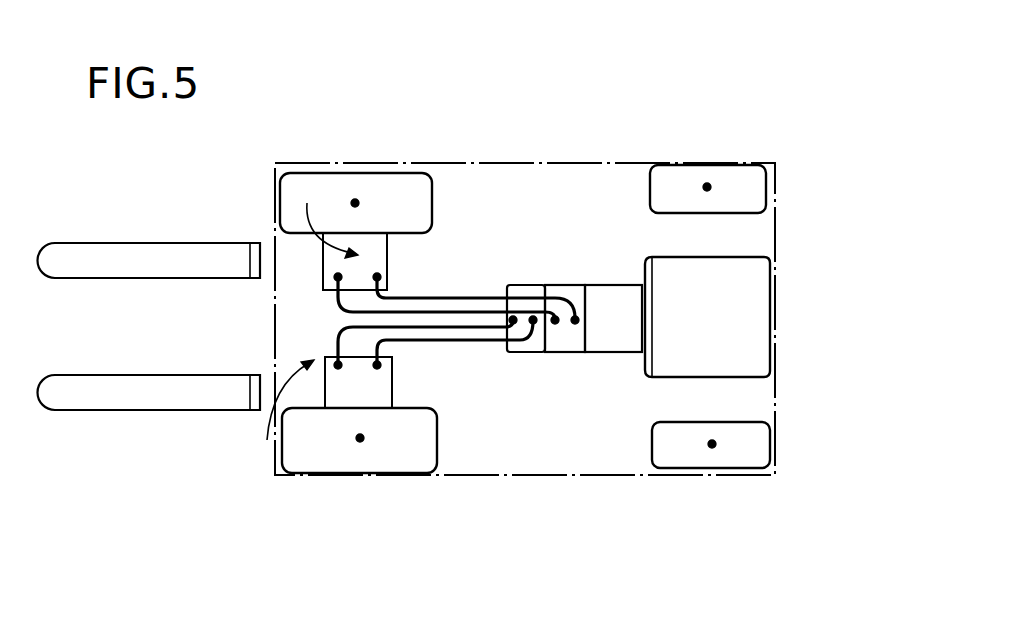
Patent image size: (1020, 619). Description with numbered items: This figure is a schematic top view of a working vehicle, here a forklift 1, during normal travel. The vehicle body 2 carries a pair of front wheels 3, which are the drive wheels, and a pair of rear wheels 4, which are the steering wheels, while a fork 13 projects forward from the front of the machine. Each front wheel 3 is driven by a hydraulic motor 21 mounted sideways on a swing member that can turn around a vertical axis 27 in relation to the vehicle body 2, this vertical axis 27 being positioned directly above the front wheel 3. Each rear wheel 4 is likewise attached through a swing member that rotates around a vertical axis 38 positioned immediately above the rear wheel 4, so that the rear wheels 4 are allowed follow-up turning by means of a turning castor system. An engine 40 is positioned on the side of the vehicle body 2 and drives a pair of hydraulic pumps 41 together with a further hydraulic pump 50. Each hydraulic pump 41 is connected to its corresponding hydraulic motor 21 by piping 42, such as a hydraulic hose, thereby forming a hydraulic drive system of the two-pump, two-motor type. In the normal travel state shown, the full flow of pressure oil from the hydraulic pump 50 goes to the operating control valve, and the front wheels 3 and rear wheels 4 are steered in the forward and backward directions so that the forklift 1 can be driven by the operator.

The forklift 1 is at (570, 123).
The vehicle body 2 is at (445, 477).
The front wheel 3 is at (328, 173).
The rear wheel 4 is at (678, 172).
The fork 13 is at (130, 382).
The hydraulic motor 21 is at (332, 263).
The vertical axis 27 is at (356, 202).
The vertical axis 38 is at (708, 186).
The engine 40 is at (745, 300).
The hydraulic pump 41 is at (567, 285).
The piping 42 is at (492, 313).
The hydraulic pump 50 is at (603, 340).